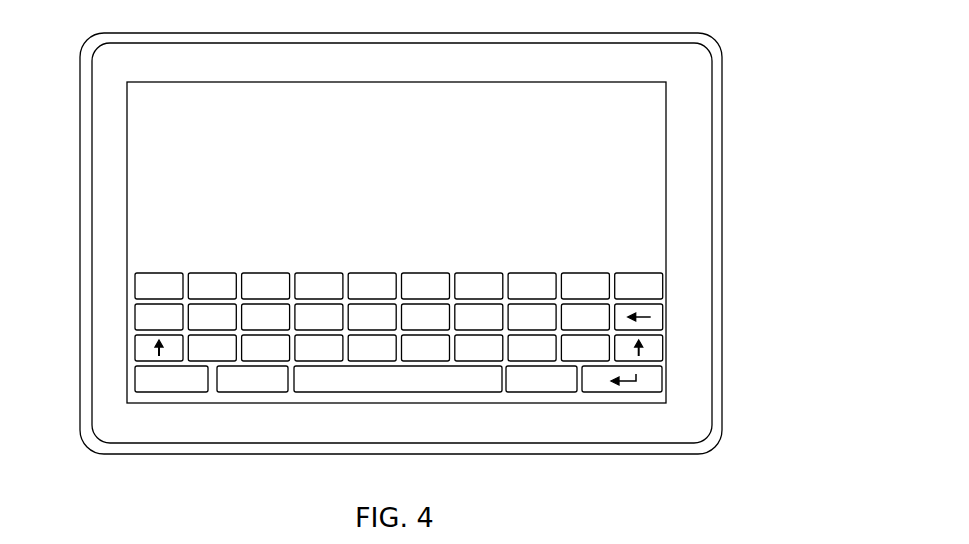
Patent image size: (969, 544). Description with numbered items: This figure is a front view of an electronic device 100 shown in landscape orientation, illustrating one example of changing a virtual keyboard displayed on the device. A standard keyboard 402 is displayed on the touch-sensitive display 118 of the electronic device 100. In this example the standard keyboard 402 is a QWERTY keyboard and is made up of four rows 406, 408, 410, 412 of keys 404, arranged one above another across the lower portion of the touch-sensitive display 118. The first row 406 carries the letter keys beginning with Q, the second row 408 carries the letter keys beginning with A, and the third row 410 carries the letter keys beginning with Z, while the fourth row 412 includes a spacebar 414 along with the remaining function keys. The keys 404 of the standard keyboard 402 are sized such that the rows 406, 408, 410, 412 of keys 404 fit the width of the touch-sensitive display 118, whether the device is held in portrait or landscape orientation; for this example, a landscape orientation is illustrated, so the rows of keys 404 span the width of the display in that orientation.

The electronic device 100 is at (682, 477).
The touch-sensitive display 118 is at (638, 114).
The standard keyboard 402 is at (660, 280).
The keys 404 is at (273, 273).
The row 406 is at (125, 281).
The row 408 is at (125, 313).
The row 410 is at (125, 346).
The row 412 is at (125, 378).
The spacebar 414 is at (390, 390).